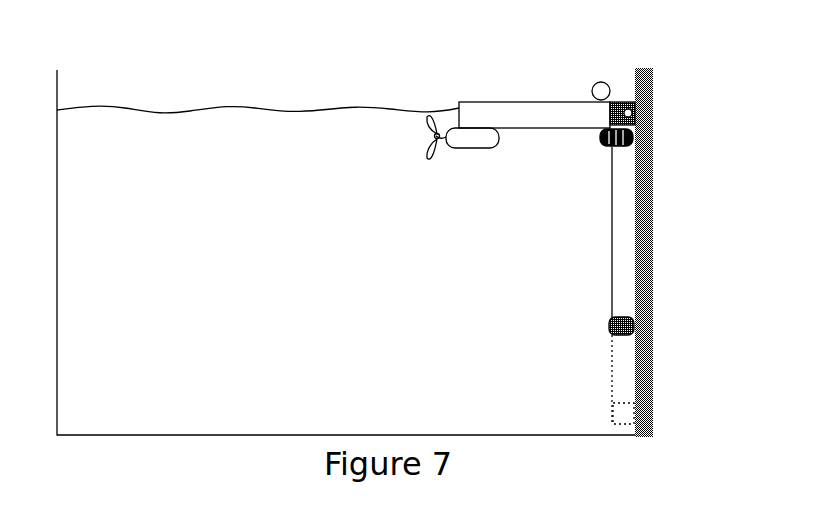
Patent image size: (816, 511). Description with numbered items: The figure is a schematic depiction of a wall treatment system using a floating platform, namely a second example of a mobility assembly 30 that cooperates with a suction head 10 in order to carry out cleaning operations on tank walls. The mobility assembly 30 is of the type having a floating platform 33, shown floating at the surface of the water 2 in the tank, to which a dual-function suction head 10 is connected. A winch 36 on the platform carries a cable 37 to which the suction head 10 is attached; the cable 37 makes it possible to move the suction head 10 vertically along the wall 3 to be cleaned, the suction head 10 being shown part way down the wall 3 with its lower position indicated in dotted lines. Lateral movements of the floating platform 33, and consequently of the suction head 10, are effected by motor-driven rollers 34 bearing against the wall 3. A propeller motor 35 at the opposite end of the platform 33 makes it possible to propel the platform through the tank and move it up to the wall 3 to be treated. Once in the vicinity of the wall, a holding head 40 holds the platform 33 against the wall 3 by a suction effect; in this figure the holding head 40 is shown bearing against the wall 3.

The body of water 2 is at (209, 99).
The wall 3 is at (650, 255).
The suction head 10 is at (610, 333).
The mobility assembly 30 is at (484, 86).
The floating platform 33 is at (516, 110).
The motor-driven rollers 34 is at (633, 143).
The propeller motor 35 is at (463, 142).
The winch 36 is at (606, 84).
The cable 37 is at (612, 240).
The holding head 40 is at (625, 107).